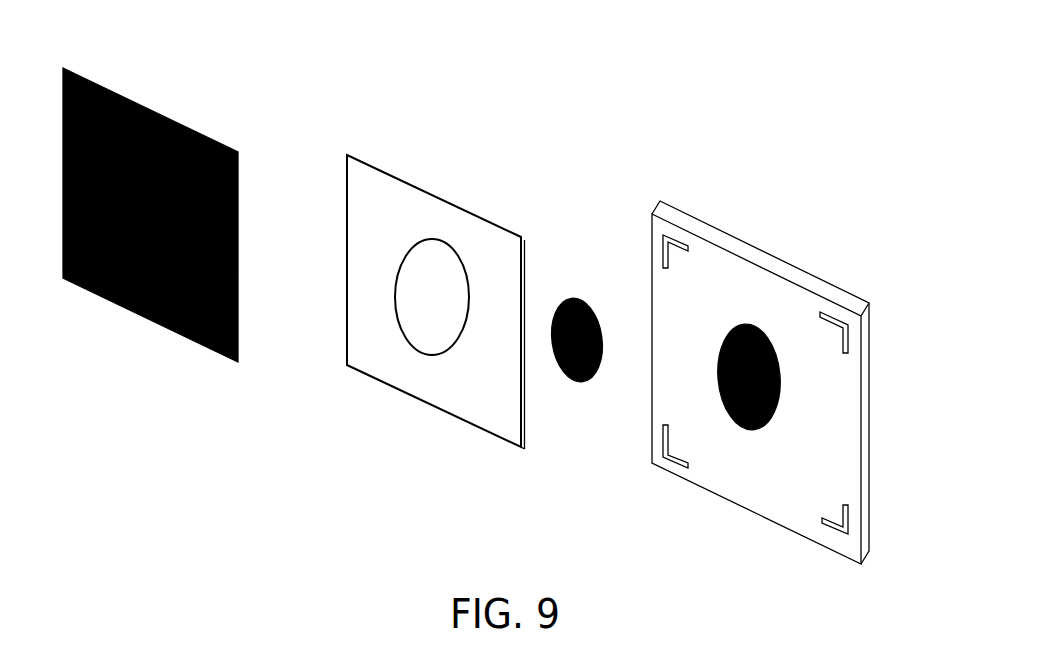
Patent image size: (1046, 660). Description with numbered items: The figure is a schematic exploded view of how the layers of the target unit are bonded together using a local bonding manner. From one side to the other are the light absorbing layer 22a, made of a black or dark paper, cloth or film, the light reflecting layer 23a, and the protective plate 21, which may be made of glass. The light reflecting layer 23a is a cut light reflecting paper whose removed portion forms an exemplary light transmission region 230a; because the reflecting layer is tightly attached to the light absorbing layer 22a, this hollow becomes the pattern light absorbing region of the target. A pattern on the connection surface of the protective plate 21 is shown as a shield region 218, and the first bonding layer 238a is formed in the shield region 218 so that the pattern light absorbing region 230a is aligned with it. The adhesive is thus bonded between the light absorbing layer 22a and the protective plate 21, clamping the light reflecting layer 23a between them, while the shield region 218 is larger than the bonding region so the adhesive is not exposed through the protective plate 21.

The light absorbing layer 22a is at (162, 113).
The light reflecting layer 23a is at (368, 163).
The light transmission region 230a is at (438, 253).
The first bonding layer 238a is at (572, 298).
The protective plate 21 is at (758, 258).
The shield region 218 is at (778, 388).